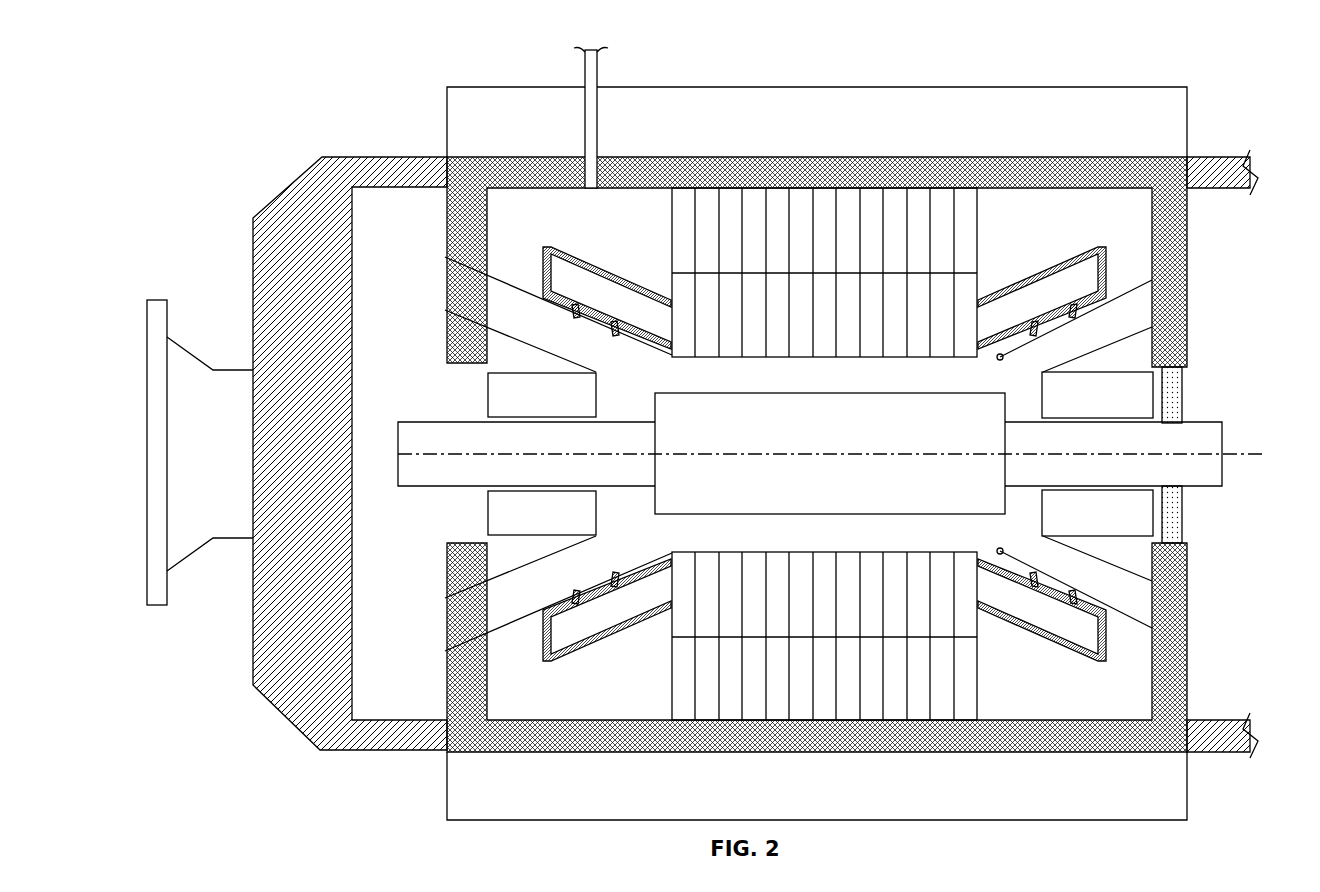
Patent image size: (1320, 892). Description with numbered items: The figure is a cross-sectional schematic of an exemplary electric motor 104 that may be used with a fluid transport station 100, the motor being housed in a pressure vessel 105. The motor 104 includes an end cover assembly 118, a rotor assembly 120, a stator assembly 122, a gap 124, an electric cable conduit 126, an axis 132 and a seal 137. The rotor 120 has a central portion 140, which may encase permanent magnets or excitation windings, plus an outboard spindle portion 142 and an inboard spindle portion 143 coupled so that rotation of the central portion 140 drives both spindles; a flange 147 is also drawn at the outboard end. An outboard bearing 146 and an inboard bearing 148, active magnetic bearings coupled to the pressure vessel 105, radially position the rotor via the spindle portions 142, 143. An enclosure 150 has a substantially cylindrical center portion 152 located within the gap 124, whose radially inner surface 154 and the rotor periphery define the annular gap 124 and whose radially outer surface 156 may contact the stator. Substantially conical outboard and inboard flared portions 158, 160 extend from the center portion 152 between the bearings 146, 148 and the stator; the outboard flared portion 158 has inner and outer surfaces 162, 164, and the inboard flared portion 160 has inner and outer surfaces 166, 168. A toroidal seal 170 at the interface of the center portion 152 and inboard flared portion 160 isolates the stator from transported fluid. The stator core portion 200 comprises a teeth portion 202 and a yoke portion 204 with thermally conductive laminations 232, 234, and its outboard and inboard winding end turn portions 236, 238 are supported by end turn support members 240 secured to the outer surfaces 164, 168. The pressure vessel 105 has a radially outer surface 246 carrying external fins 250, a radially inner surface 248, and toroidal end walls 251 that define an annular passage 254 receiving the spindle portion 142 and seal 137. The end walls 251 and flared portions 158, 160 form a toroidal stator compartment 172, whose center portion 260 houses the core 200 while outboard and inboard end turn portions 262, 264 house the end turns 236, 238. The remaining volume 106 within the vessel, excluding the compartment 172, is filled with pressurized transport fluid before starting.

The fluid transport station 100 is at (232, 62).
The electric motor 104 is at (270, 166).
The pressure vessel 105 is at (672, 42).
The volume 106 is at (489, 316).
The end cover assembly 118 is at (308, 755).
The rotor assembly 120 is at (1216, 400).
The stator assembly 122 is at (1022, 46).
The gap 124 is at (894, 385).
The electric cable conduit 126 is at (585, 70).
The axis 132 is at (1250, 453).
The seal 137 is at (1184, 517).
The central portion 140 is at (749, 489).
The outboard spindle portion 142 is at (522, 448).
The inboard spindle portion 143 is at (1082, 448).
The outboard bearing 146 is at (522, 406).
The flange 147 is at (200, 452).
The inboard bearing 148 is at (1082, 406).
The enclosure 150 is at (665, 372).
The center portion 152 is at (760, 362).
The radially inner surface 154 is at (825, 358).
The radially outer surface 156 is at (920, 354).
The outboard flared portion 158 is at (577, 330).
The inboard flared portion 160 is at (1068, 333).
The radially inner surface 162 is at (600, 340).
The radially outer surface 164 is at (510, 270).
The radially inner surface 166 is at (1042, 340).
The radially outer surface 168 is at (1140, 283).
The toroidal seal 170 is at (997, 361).
The stator assembly compartment 172 is at (802, 46).
The stator core portion 200 is at (898, 205).
The teeth portion 202 is at (682, 314).
The yoke portion 204 is at (934, 216).
The thermally conductive laminations 232 is at (790, 296).
The thermally conductive laminations 234 is at (790, 222).
The outboard winding end turn portion 236 is at (604, 260).
The inboard winding end turn portion 238 is at (1080, 252).
The end turn support members 240 is at (562, 248).
The radially outer surface 246 is at (690, 157).
The radially inner surface 248 is at (548, 192).
The external fins 250 is at (1122, 139).
The end walls 251 is at (445, 256).
The annular passage 254 is at (445, 401).
The center portion 260 is at (800, 188).
The outboard end turn portion 262 is at (627, 216).
The inboard end turn portion 264 is at (1000, 216).